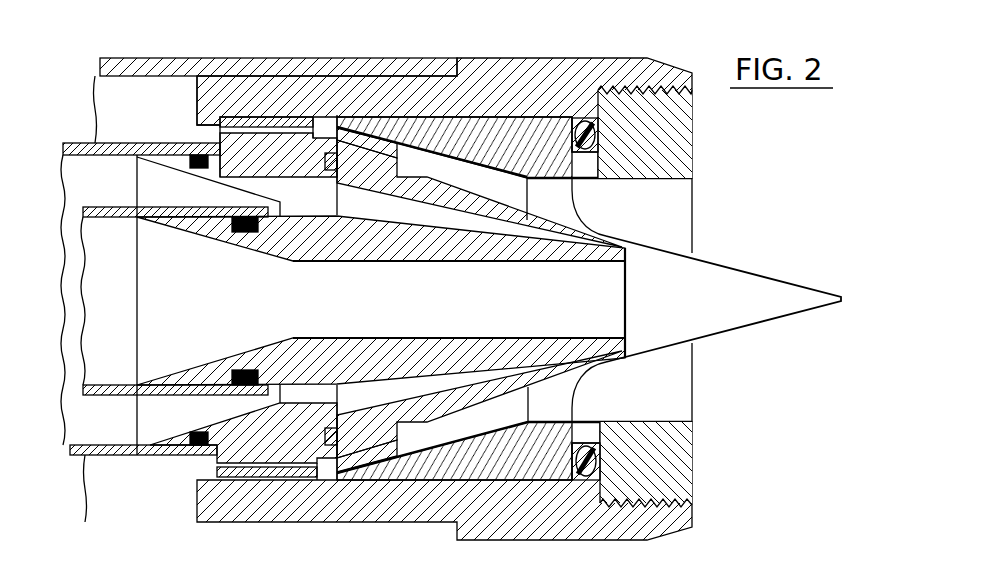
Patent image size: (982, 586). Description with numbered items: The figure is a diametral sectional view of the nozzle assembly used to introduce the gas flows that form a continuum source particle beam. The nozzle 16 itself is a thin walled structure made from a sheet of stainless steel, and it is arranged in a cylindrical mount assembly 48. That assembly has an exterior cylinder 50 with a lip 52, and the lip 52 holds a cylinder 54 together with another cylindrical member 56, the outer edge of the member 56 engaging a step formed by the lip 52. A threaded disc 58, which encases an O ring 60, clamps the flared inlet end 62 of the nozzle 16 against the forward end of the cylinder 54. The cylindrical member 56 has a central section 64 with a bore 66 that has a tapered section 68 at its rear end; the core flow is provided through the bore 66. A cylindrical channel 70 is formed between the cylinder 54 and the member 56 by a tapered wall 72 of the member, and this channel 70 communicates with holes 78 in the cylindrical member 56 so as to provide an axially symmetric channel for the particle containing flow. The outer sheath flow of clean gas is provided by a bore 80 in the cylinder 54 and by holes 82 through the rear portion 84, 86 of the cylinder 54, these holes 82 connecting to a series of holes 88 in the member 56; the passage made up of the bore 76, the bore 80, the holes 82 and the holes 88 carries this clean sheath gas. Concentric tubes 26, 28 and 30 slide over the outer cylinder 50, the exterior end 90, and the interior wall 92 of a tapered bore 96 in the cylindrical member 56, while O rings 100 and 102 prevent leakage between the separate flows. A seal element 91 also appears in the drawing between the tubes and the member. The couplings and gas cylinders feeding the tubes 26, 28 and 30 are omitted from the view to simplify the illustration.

The nozzle 16 is at (836, 273).
The concentric tube 26 is at (121, 218).
The concentric tube 28 is at (86, 143).
The concentric tube 30 is at (173, 58).
The cylindrical mount assembly 48 is at (524, 52).
The exterior cylinder 50 is at (592, 58).
The lip 52 is at (197, 126).
The cylinder 54 is at (498, 481).
The cylindrical member 56 is at (256, 481).
The threaded disc 58 is at (692, 153).
The O ring 60 is at (600, 135).
The flared inlet end 62 is at (574, 408).
The central section 64 is at (395, 350).
The bore 66 is at (484, 348).
The tapered section 68 is at (206, 233).
The cylindrical channel 70 is at (526, 360).
The tapered wall 72 is at (517, 214).
The bore 76 is at (546, 183).
The holes 78 is at (313, 203).
The bore 80 is at (463, 130).
The holes 82 is at (342, 128).
The rear portion 84 is at (376, 125).
The rear portion 86 is at (365, 166).
The holes 88 is at (256, 126).
The exterior end 90 is at (172, 447).
The seal 91 is at (198, 168).
The interior wall 92 is at (166, 385).
The tapered bore 96 is at (150, 410).
The O ring 100 is at (249, 232).
The O ring 102 is at (324, 437).